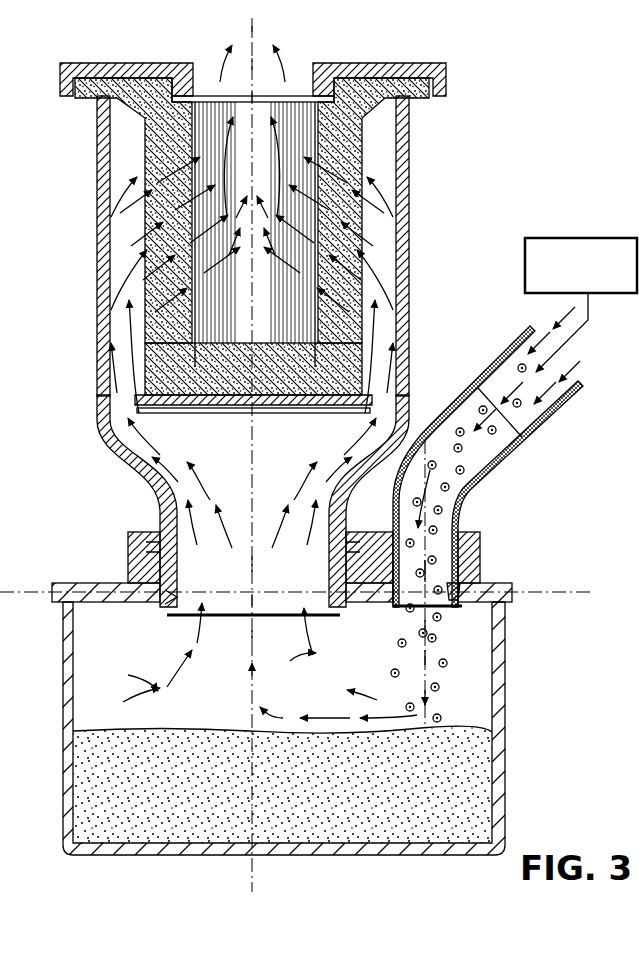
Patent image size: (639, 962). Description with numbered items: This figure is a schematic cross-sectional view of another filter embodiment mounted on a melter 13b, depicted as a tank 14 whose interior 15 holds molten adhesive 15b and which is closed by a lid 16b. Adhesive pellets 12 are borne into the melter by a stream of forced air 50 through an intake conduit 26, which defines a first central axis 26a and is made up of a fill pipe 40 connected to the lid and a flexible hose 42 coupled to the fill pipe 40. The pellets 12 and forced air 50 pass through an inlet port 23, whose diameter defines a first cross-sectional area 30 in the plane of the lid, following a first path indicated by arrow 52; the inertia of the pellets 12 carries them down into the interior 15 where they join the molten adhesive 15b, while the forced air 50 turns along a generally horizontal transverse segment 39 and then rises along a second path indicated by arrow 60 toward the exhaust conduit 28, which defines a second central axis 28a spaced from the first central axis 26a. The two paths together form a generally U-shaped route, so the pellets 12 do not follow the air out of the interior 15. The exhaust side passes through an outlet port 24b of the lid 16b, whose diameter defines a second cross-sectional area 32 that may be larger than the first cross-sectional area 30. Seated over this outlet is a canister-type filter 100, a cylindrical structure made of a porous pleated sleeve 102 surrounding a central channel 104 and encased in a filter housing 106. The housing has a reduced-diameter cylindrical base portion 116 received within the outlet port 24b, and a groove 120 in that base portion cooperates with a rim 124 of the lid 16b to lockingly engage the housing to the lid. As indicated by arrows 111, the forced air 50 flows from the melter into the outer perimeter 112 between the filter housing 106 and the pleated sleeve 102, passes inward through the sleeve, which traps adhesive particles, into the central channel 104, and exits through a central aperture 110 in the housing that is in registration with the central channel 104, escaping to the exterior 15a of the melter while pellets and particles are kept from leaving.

The central aperture 110 is at (311, 66).
The arrows 111 is at (256, 38).
The outer perimeter 112 is at (123, 155).
The exhaust conduit 28 is at (422, 136).
The filter 100 is at (368, 148).
The filter housing 106 is at (410, 255).
The central channel 104 is at (255, 292).
The porous pleated sleeve 102 is at (350, 323).
The flexible hose 42 is at (500, 360).
The stream of forced air 50 is at (436, 424).
The exterior 15a is at (137, 413).
The reduced diameter cylindrical base portion 116 is at (163, 517).
The groove 120 is at (127, 530).
The rim 124 is at (347, 523).
The intake conduit 26 is at (488, 485).
The fill pipe 40 is at (482, 545).
The inlet port 23 is at (460, 578).
The lid 16b is at (515, 594).
The outlet port 24b is at (168, 612).
The second cross-sectional area 32 is at (232, 618).
The first path 52 is at (419, 632).
The adhesive pellets 12 is at (391, 672).
The first cross-sectional area 30 is at (443, 608).
The tank 14 is at (497, 700).
The interior 15 is at (207, 722).
The second path 60 is at (248, 686).
The second central axis 28a is at (262, 767).
The first central axis 26a is at (423, 752).
The transverse segment 39 is at (327, 720).
The molten adhesive 15b is at (138, 817).
The container 13b is at (531, 729).